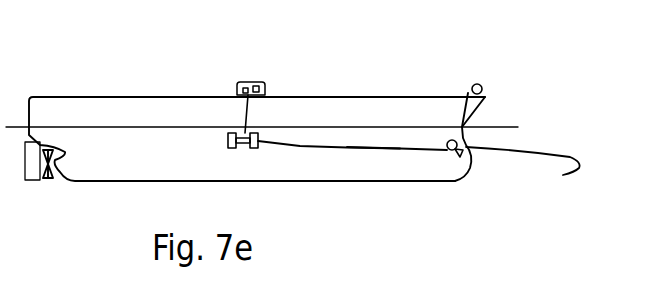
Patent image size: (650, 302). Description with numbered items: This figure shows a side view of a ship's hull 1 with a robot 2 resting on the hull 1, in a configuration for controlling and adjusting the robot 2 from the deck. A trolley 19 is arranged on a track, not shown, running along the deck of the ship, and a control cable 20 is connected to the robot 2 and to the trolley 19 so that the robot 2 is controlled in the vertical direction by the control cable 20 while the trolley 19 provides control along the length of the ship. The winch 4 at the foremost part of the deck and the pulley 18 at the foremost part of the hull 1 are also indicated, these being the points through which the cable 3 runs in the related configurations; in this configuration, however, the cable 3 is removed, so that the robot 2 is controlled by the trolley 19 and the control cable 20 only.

The ship's hull 1 is at (111, 168).
The robot 2 is at (238, 128).
The cable 3 is at (347, 147).
The winch 4 is at (482, 85).
The pulley 18 is at (513, 177).
The trolley 19 is at (265, 85).
The control cable 20 is at (255, 112).